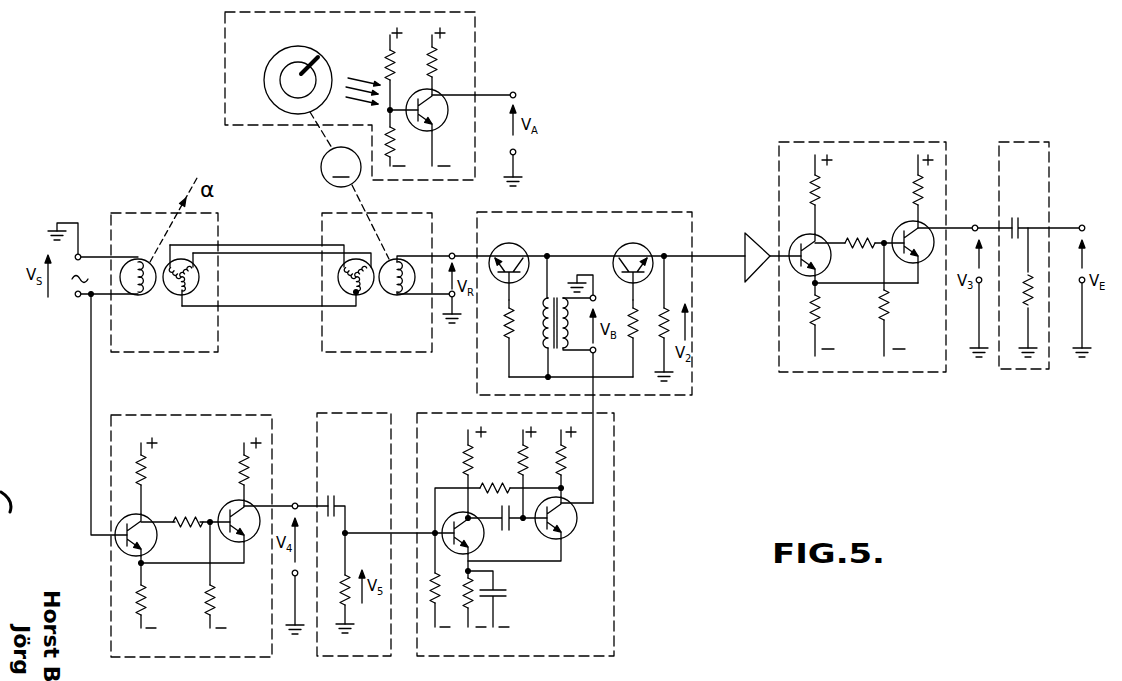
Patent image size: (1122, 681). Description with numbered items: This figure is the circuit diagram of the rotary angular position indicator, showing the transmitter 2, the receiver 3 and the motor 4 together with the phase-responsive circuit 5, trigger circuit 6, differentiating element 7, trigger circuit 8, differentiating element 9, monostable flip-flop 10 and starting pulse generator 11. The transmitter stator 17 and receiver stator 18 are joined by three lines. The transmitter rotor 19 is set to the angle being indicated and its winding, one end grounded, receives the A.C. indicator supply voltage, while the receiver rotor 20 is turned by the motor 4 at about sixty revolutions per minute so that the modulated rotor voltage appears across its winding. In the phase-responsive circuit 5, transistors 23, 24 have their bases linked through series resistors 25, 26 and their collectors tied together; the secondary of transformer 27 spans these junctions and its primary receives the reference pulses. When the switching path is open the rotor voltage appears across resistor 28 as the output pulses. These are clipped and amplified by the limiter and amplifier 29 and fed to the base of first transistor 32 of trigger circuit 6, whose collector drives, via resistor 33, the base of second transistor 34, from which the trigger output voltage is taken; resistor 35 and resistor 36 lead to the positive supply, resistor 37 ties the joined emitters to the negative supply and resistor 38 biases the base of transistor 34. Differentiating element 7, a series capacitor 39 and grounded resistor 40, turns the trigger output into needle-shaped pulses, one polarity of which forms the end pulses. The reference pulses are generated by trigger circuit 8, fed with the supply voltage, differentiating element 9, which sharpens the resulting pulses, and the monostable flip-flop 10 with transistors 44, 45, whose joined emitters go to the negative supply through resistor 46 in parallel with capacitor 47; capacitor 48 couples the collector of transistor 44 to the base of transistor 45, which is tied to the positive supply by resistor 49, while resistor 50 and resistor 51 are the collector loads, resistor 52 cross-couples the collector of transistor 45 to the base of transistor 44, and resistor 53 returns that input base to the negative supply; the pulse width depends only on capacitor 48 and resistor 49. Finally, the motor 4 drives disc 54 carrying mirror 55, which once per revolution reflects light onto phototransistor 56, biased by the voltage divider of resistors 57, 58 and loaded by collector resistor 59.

The transmitter 2 is at (153, 222).
The receiver 3 is at (352, 213).
The motor 4 is at (321, 165).
The phase-responsive circuit 5 is at (674, 193).
The trigger circuit 6 is at (889, 148).
The differentiating element 7 is at (1073, 122).
The trigger circuit 8 is at (203, 423).
The differentiating element 9 is at (383, 400).
The monostable flip-flop 10 is at (602, 467).
The starting pulse generator 11 is at (240, 42).
The transmitter stator 17 is at (175, 294).
The receiver stator 18 is at (365, 295).
The transmitter rotor 19 is at (131, 289).
The receiver rotor 20 is at (392, 294).
The transistor 23 is at (514, 248).
The transistor 24 is at (640, 247).
The resistor 25 is at (504, 325).
The resistor 26 is at (631, 316).
The transformer 27 is at (561, 350).
The resistor 28 is at (662, 321).
The limiter and amplifier 29 is at (753, 234).
The first transistor 32 is at (806, 238).
The resistor 33 is at (866, 237).
The second transistor 34 is at (908, 224).
The resistor 35 is at (917, 190).
The resistor 36 is at (813, 188).
The resistor 37 is at (813, 300).
The resistor 38 is at (882, 303).
The capacitor 39 is at (1022, 223).
The resistor 40 is at (1029, 288).
The transistor 44 is at (464, 513).
The transistor 45 is at (567, 533).
The resistor 46 is at (469, 592).
The capacitor 47 is at (503, 598).
The capacitor 48 is at (510, 530).
The resistor 49 is at (521, 460).
The resistor 50 is at (562, 466).
The resistor 51 is at (466, 460).
The resistor 52 is at (484, 486).
The resistor 53 is at (440, 588).
The disc 54 is at (284, 80).
The mirror 55 is at (308, 58).
The phototransistor 56 is at (437, 125).
The resistor 57 is at (388, 62).
The resistor 58 is at (393, 137).
The resistor 59 is at (435, 60).